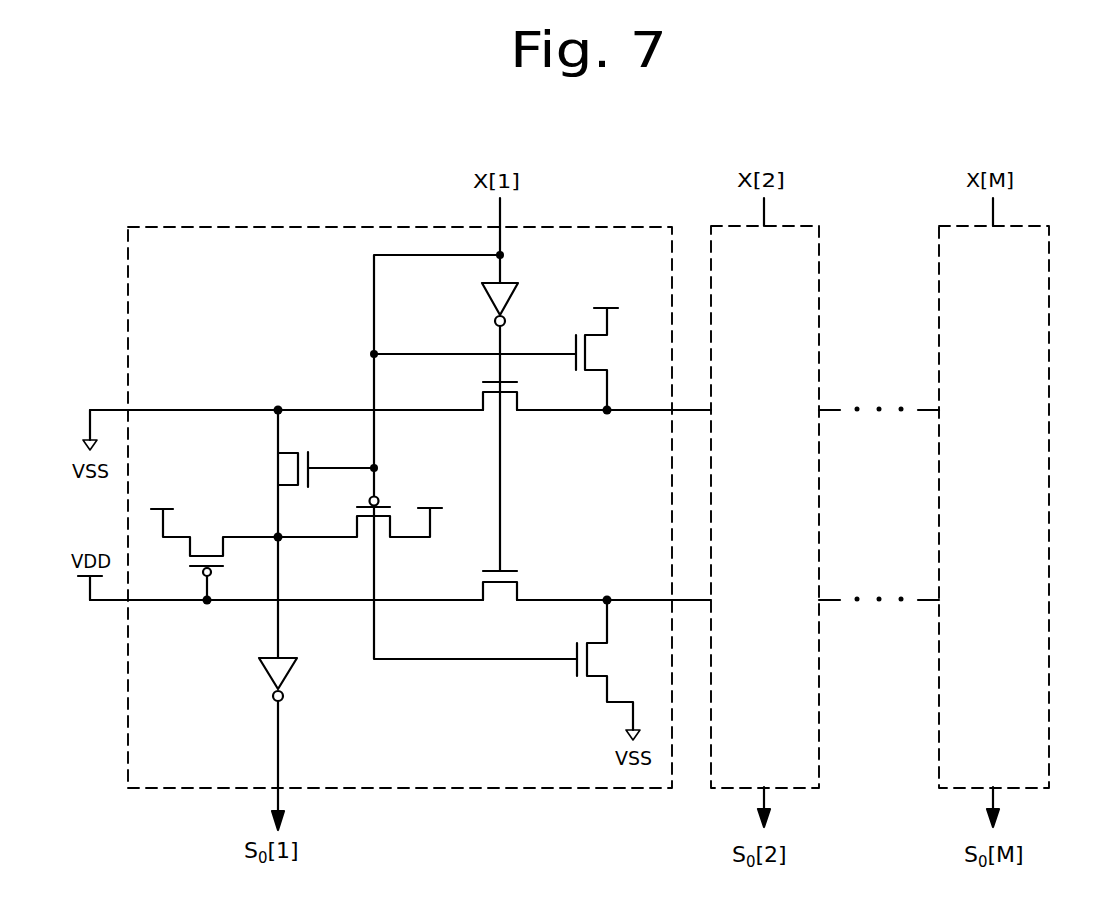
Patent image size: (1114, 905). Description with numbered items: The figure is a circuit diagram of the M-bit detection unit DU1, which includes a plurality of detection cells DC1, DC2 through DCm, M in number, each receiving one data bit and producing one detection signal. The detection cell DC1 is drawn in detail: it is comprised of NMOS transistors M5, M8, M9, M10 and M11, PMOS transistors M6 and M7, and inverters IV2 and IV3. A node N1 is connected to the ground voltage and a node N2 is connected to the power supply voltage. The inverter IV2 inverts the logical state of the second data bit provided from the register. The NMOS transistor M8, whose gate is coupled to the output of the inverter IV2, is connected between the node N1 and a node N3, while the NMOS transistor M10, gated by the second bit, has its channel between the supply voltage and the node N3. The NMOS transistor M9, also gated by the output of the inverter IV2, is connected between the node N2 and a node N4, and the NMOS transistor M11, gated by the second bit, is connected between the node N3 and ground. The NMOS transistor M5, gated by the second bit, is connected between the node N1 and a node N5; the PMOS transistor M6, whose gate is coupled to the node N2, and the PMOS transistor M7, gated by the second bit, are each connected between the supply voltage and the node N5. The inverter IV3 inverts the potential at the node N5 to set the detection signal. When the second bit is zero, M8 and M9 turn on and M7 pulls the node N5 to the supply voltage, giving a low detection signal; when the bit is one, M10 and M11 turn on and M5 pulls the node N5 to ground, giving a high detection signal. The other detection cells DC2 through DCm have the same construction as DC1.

The M-bit detection unit DU1 is at (213, 138).
The detection cell DC1 is at (616, 227).
The detection cell DC2 is at (819, 252).
The detection cell DCm is at (1049, 252).
The node N1 is at (280, 408).
The node N2 is at (207, 604).
The node N3 is at (607, 414).
The node N4 is at (607, 596).
The node N5 is at (280, 540).
The NMOS transistor M5 is at (280, 469).
The PMOS transistor M6 is at (214, 554).
The PMOS transistor M7 is at (360, 530).
The NMOS transistor M8 is at (507, 411).
The NMOS transistor M9 is at (500, 599).
The NMOS transistor M10 is at (610, 359).
The NMOS transistor M11 is at (609, 670).
The inverter IV2 is at (483, 302).
The inverter IV3 is at (290, 676).